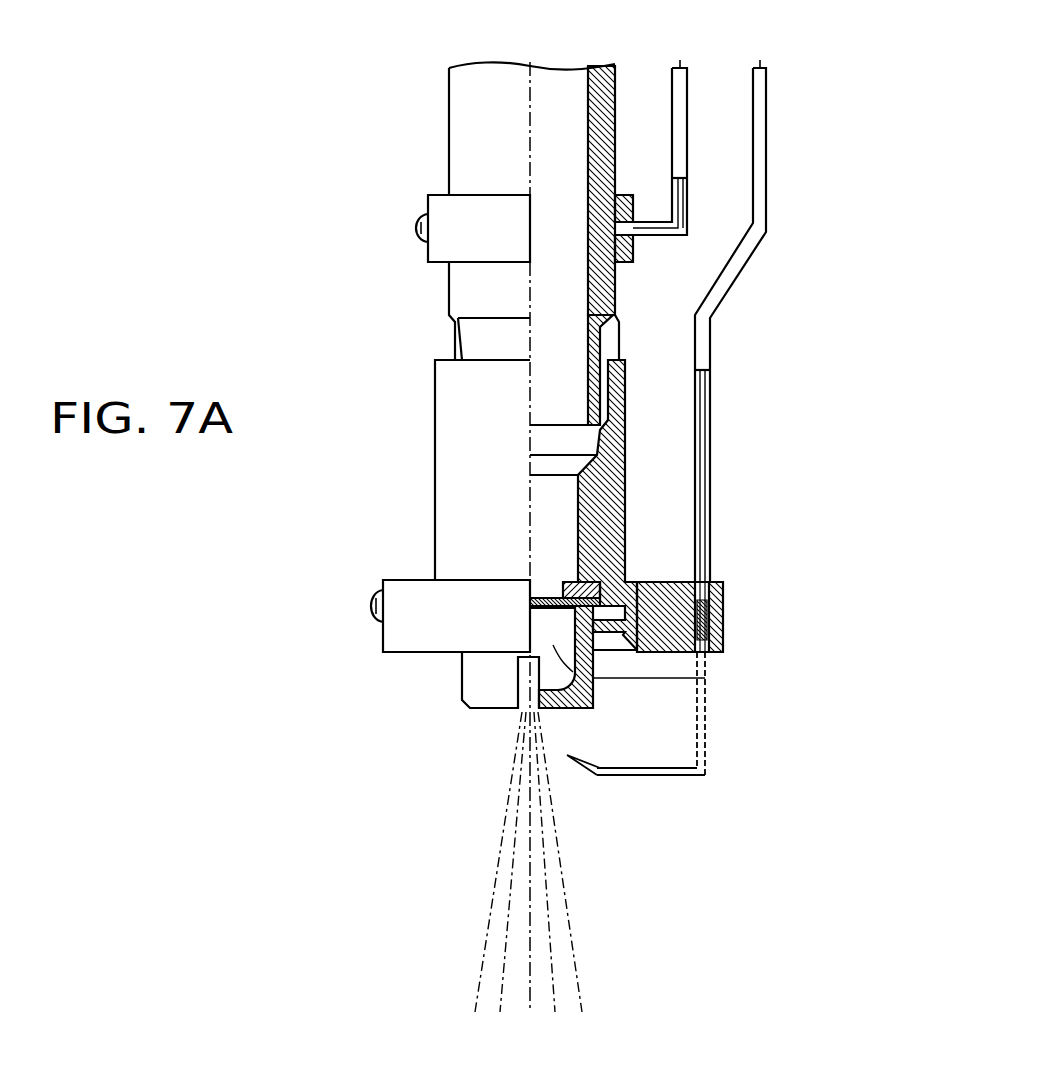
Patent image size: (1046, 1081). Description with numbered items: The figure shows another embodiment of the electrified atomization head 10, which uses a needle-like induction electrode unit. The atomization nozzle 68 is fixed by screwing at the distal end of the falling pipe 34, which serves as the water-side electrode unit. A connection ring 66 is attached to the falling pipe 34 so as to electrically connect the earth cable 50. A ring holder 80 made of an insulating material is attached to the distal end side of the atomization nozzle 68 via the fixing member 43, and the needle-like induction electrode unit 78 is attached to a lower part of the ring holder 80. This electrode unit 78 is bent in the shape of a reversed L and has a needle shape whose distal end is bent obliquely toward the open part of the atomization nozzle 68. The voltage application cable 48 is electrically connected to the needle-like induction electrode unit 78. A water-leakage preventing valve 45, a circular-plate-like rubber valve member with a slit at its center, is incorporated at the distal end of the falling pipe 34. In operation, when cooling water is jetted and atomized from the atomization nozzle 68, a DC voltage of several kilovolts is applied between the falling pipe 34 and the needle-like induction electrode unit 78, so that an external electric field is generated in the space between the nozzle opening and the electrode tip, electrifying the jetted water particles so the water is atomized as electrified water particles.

The electrified atomization head 10 is at (418, 85).
The falling pipe 34 is at (472, 124).
The connection ring 66 is at (450, 245).
The earth cable 50 is at (688, 100).
The voltage application cable 48 is at (768, 110).
The water-leakage preventing valve 45 is at (548, 590).
The fixing member 43 is at (635, 580).
The ring holder 80 is at (398, 634).
The atomization nozzle 68 is at (705, 679).
The needle-like induction electrode unit 78 is at (640, 776).